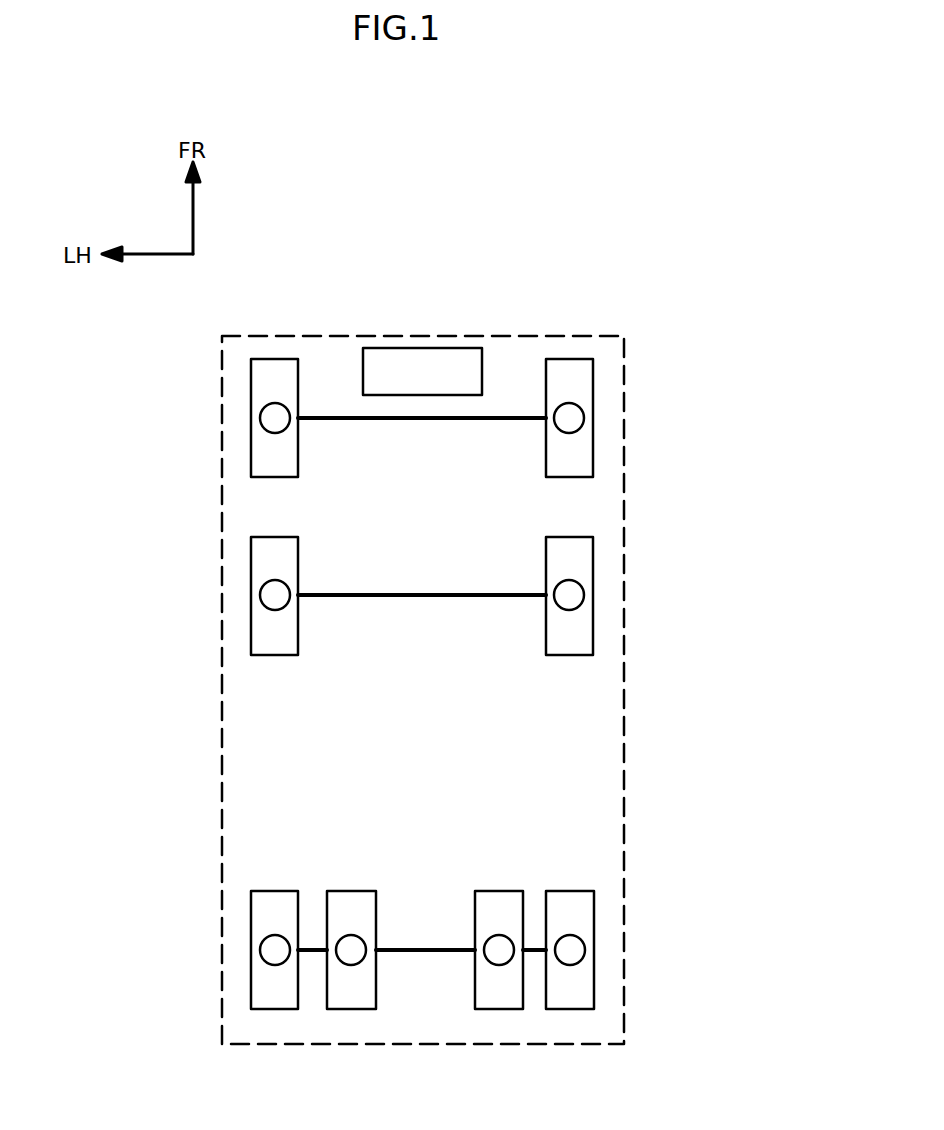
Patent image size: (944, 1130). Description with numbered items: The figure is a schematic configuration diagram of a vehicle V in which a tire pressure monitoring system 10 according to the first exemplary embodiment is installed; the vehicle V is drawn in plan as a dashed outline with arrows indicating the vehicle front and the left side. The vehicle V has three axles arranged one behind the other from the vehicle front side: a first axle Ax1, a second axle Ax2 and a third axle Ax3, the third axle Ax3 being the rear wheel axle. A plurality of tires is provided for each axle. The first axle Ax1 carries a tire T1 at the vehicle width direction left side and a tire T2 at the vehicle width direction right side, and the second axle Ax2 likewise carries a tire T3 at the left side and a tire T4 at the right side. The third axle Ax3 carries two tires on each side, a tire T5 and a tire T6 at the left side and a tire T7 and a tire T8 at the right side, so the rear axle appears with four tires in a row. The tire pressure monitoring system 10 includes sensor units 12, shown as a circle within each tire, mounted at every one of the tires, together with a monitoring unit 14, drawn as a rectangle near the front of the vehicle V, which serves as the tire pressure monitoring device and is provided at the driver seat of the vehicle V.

The tire pressure monitoring system 10 is at (645, 258).
The vehicle V is at (494, 335).
The sensor unit 12 is at (275, 403).
The monitoring unit 14 is at (425, 348).
The first axle Ax1 is at (423, 420).
The second axle Ax2 is at (427, 598).
The third axle Ax3 is at (431, 948).
The tire T1 is at (251, 420).
The tire T2 is at (593, 418).
The tire T3 is at (251, 598).
The tire T4 is at (593, 596).
The tire T5 is at (275, 1009).
The tire T6 is at (351, 1009).
The tire T7 is at (499, 1009).
The tire T8 is at (570, 1009).